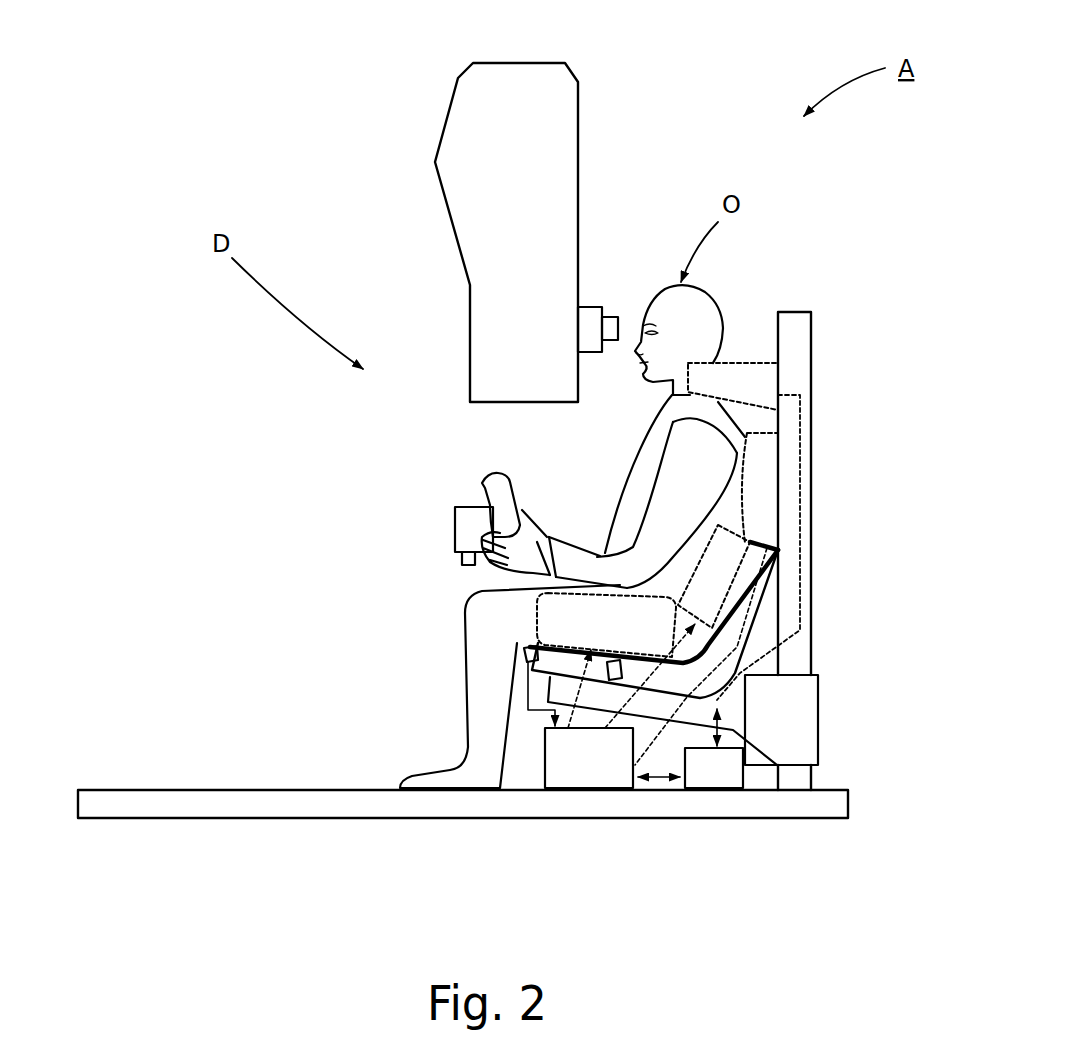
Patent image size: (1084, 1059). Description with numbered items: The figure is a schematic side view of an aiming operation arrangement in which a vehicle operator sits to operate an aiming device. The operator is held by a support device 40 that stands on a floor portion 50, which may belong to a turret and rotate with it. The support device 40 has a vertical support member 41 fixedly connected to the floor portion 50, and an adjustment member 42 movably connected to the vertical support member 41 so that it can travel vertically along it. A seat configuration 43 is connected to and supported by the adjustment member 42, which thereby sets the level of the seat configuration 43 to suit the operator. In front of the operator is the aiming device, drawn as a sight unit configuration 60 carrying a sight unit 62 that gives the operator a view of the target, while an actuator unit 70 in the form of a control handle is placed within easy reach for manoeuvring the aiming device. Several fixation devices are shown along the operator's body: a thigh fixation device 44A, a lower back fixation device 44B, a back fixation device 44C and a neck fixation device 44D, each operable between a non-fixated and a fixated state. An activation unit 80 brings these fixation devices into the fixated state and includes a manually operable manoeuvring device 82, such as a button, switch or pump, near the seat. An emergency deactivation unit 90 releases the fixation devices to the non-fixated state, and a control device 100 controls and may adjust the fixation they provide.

The support device 40 is at (806, 299).
The vertical support member 41 is at (817, 373).
The adjustment member 42 is at (824, 718).
The seat configuration 43 is at (750, 652).
The thigh fixation device 44A is at (531, 610).
The lower back fixation device 44B is at (747, 521).
The back fixation device 44C is at (762, 430).
The neck fixation device 44D is at (756, 360).
The floor portion 50 is at (216, 786).
The sight unit configuration 60 is at (406, 61).
The sight unit 62 is at (606, 297).
The actuator unit 70 is at (476, 486).
The activation unit 80 is at (589, 758).
The manually operable manoeuvring device 82 is at (521, 656).
The emergency deactivation unit 90 is at (618, 658).
The control device 100 is at (690, 748).